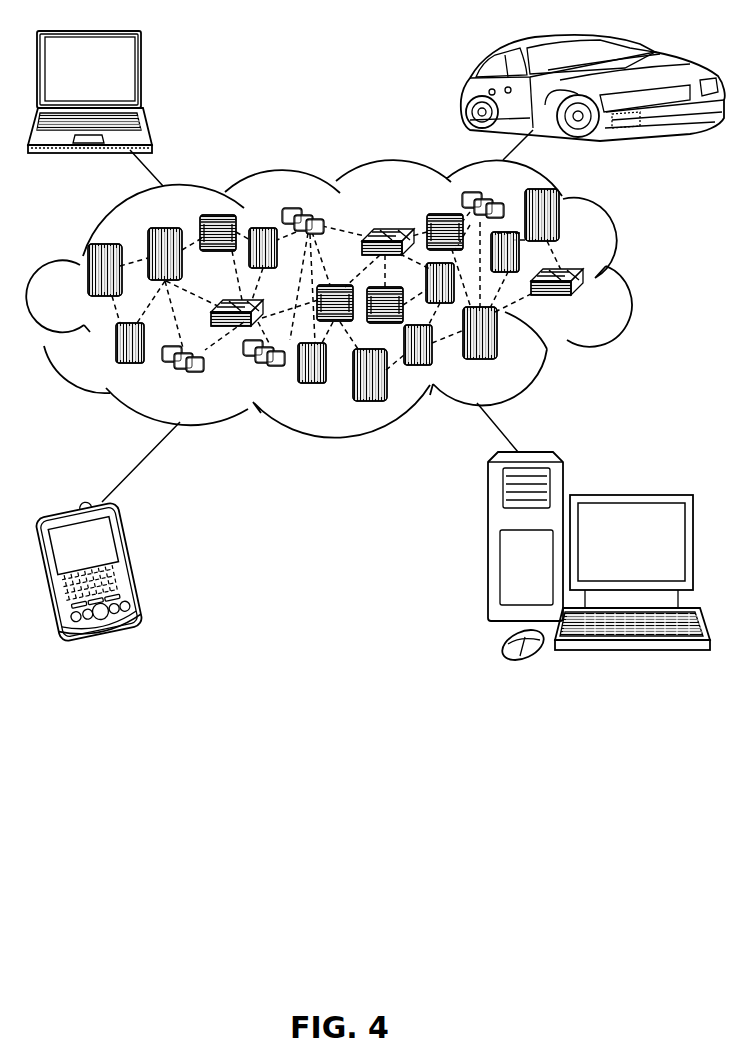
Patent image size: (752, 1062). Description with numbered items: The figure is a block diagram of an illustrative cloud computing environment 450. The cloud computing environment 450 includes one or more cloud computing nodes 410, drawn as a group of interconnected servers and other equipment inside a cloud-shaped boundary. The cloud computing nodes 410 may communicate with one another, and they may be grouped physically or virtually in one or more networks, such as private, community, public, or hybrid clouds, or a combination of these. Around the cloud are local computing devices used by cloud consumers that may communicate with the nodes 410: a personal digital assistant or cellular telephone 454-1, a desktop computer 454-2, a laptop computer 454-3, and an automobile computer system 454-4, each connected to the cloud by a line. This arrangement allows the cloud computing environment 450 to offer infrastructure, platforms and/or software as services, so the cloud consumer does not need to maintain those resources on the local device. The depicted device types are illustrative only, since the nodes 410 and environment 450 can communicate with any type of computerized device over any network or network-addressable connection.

The cloud computing environment 450 is at (630, 283).
The cloud computing nodes 410 is at (596, 302).
The personal digital assistant or cellular telephone 454-1 is at (134, 563).
The desktop computer 454-2 is at (630, 495).
The laptop computer 454-3 is at (143, 77).
The automobile computer system 454-4 is at (463, 90).